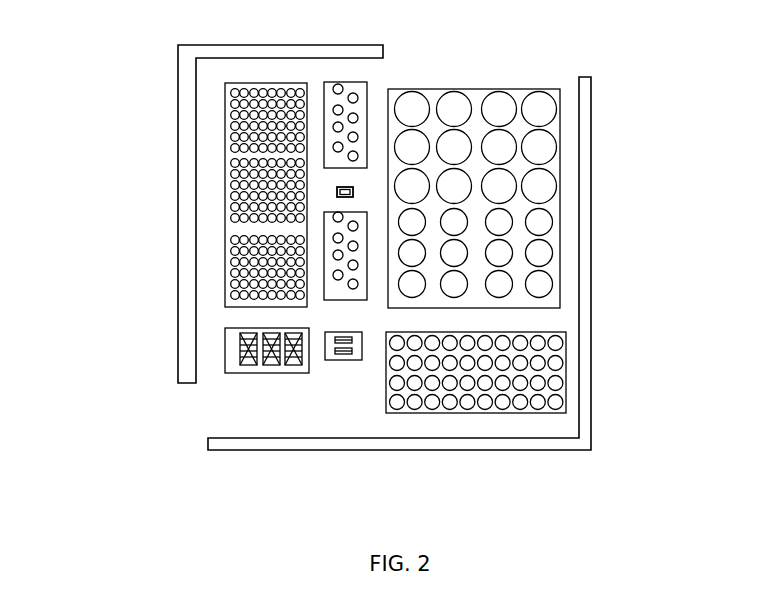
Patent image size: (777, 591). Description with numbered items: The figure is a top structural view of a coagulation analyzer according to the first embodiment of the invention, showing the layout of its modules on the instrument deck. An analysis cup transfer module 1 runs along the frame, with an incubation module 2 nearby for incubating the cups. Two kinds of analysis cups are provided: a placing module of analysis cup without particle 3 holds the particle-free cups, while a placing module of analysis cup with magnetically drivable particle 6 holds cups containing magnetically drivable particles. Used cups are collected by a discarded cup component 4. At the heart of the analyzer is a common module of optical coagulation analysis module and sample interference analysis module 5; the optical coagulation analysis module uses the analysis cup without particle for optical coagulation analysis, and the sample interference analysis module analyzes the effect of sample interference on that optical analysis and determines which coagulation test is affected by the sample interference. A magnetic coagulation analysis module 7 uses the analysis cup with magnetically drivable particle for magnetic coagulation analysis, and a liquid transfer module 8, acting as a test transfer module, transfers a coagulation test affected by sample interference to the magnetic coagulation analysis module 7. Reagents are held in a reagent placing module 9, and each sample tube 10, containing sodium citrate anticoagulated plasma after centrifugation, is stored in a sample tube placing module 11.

The analysis cup transfer module 1 is at (176, 66).
The incubation module 2 is at (232, 116).
The placing module of analysis cup without particle 3 is at (222, 163).
The discarded cup component 4 is at (335, 198).
The common module of optical coagulation analysis module and sample interference ana 5 is at (322, 243).
The placing module of analysis cup with magnetically drivable particle 6 is at (221, 343).
The magnetic coagulation analysis module 7 is at (206, 413).
The liquid transfer module 8 is at (399, 289).
The reagent placing module 9 is at (549, 198).
The sample tube 10 is at (508, 419).
The sample tube placing module 11 is at (558, 372).